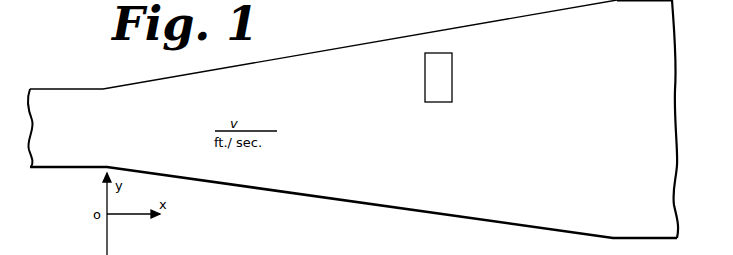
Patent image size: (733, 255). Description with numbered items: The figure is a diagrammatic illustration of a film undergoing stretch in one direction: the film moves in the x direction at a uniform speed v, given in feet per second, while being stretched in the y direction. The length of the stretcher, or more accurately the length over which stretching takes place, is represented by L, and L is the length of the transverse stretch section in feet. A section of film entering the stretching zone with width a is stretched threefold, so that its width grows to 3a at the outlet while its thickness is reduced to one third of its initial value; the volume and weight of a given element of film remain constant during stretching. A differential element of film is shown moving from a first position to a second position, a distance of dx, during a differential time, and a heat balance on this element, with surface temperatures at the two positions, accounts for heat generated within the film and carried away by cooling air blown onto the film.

The initial film width a is at (102, 89).
The differential element length dx is at (461, 77).
The stretched film width 3a is at (603, 28).
The stretcher length L is at (612, 254).